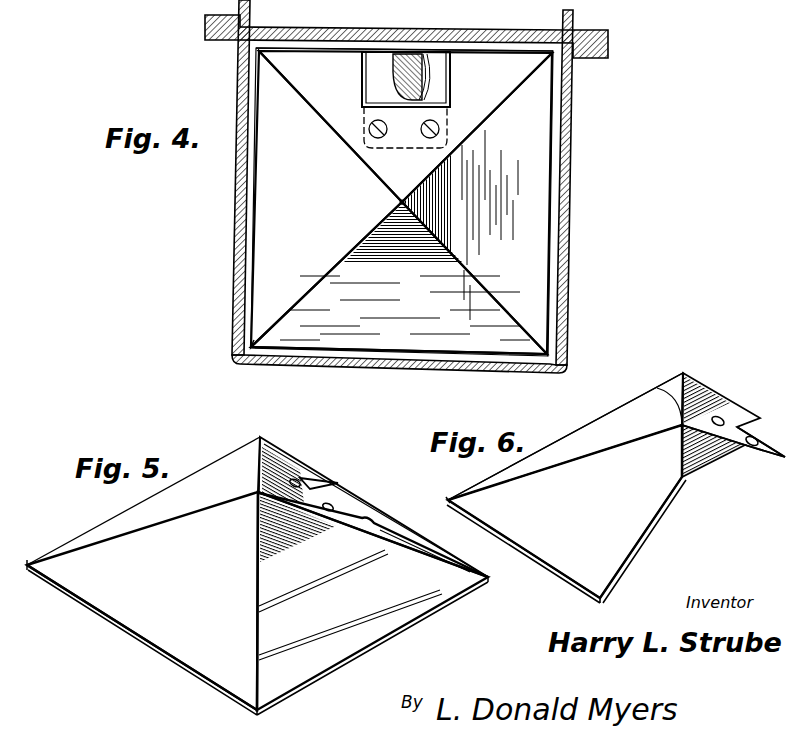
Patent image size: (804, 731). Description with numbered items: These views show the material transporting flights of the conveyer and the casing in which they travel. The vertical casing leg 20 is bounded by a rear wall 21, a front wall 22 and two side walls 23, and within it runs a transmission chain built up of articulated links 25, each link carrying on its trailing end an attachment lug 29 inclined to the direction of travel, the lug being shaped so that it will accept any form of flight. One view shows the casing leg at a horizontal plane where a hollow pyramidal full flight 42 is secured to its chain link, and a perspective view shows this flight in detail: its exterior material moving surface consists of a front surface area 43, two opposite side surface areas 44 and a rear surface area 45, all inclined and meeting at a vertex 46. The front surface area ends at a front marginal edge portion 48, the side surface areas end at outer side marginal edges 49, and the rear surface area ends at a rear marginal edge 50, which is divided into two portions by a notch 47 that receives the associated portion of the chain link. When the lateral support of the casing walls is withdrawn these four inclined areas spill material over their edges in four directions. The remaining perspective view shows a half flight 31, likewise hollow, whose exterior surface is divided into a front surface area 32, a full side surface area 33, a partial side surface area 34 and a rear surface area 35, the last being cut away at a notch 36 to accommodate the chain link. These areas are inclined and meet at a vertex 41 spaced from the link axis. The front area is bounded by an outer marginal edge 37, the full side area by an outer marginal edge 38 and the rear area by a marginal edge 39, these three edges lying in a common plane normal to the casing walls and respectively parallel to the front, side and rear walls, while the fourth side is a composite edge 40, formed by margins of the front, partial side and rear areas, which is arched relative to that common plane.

In FIG. 4, the vertical casing leg 20 is at (232, 360).
In FIG. 4, the rear wall 21 is at (408, 32).
In FIG. 4, the front wall 22 is at (390, 362).
In FIG. 4, the side walls 23 is at (240, 196).
In FIG. 4, the articulated links 25 is at (385, 60).
In FIG. 4, the attachment lug 29 is at (400, 150).
In FIG. 6, the left hand half flight 31 is at (448, 500).
In FIG. 6, the front surface area 32 is at (565, 511).
In FIG. 6, the full side surface area 33 is at (628, 420).
In FIG. 6, the partial side surface area 34 is at (709, 460).
In FIG. 6, the rear surface area 35 is at (712, 400).
In FIG. 6, the notch 36 is at (766, 440).
In FIG. 6, the outer marginal edge of front surface area 37 is at (546, 565).
In FIG. 6, the outer marginal edge of side surface area 38 is at (600, 417).
In FIG. 6, the marginal edge of rear surface area 39 is at (694, 380).
In FIG. 6, the composite edge 40 is at (660, 520).
In FIG. 6, the vertex 41 is at (662, 388).
In FIG. 4, the full flight 42 is at (247, 347).
In FIG. 5, the full flight 42 is at (27, 572).
In FIG. 4, the front surface area 43 is at (399, 278).
In FIG. 5, the front surface area 43 is at (142, 601).
In FIG. 4, the side surface areas 44 is at (401, 202).
In FIG. 5, the side surface areas 44 is at (212, 486).
In FIG. 4, the rear surface area 45 is at (405, 126).
In FIG. 5, the rear surface area 45 is at (282, 470).
In FIG. 4, the vertex 46 is at (400, 203).
In FIG. 5, the vertex 46 is at (250, 497).
In FIG. 4, the notch 47 is at (449, 90).
In FIG. 5, the notch 47 is at (356, 515).
In FIG. 4, the front marginal edge portion 48 is at (338, 356).
In FIG. 5, the front marginal edge portion 48 is at (146, 645).
In FIG. 4, the outer side marginal edges 49 is at (556, 170).
In FIG. 5, the outer side marginal edges 49 is at (112, 518).
In FIG. 4, the rear marginal edge 50 is at (320, 47).
In FIG. 5, the rear marginal edge 50 is at (318, 472).